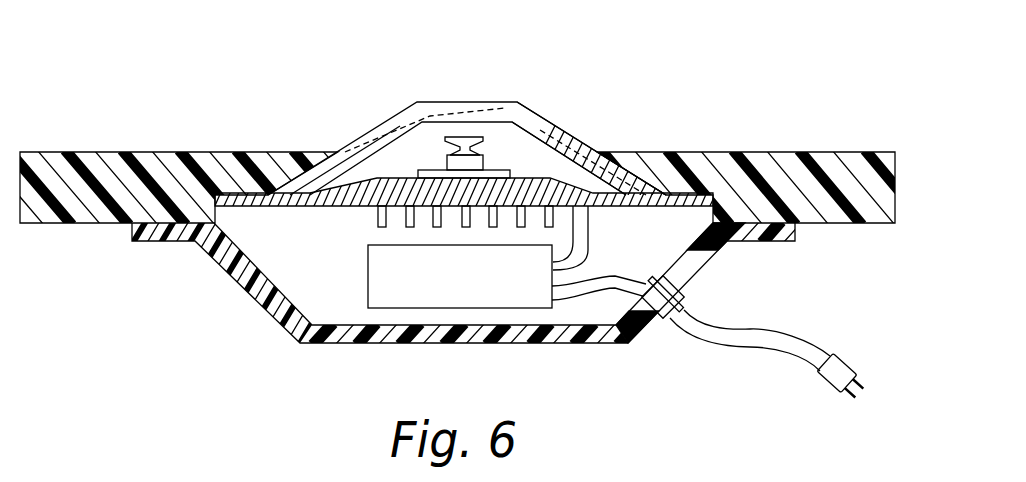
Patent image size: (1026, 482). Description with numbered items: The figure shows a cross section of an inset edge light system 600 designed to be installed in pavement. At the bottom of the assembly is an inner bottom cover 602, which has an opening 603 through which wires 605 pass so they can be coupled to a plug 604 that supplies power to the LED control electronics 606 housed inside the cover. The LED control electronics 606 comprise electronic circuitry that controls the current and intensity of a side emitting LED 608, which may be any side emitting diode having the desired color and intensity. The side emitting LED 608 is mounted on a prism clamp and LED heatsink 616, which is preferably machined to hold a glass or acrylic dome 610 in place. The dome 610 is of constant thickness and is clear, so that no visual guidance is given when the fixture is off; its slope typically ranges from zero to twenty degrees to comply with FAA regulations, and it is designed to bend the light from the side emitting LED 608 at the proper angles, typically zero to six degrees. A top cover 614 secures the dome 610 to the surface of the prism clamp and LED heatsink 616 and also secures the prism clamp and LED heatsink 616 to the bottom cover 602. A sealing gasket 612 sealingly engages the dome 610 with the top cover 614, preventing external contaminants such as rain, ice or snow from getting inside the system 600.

The inset edge light system 600 is at (764, 88).
The inner bottom cover 602 is at (592, 343).
The opening 603 is at (692, 312).
The plug 604 is at (831, 380).
The wires 605 is at (648, 283).
The LED control electronics 606 is at (473, 308).
The side emitting LED 608 is at (466, 137).
The dome 610 is at (403, 110).
The sealing gasket 612 is at (599, 157).
The top cover 614 is at (147, 152).
The prism clamp and LED heatsink 616 is at (307, 210).